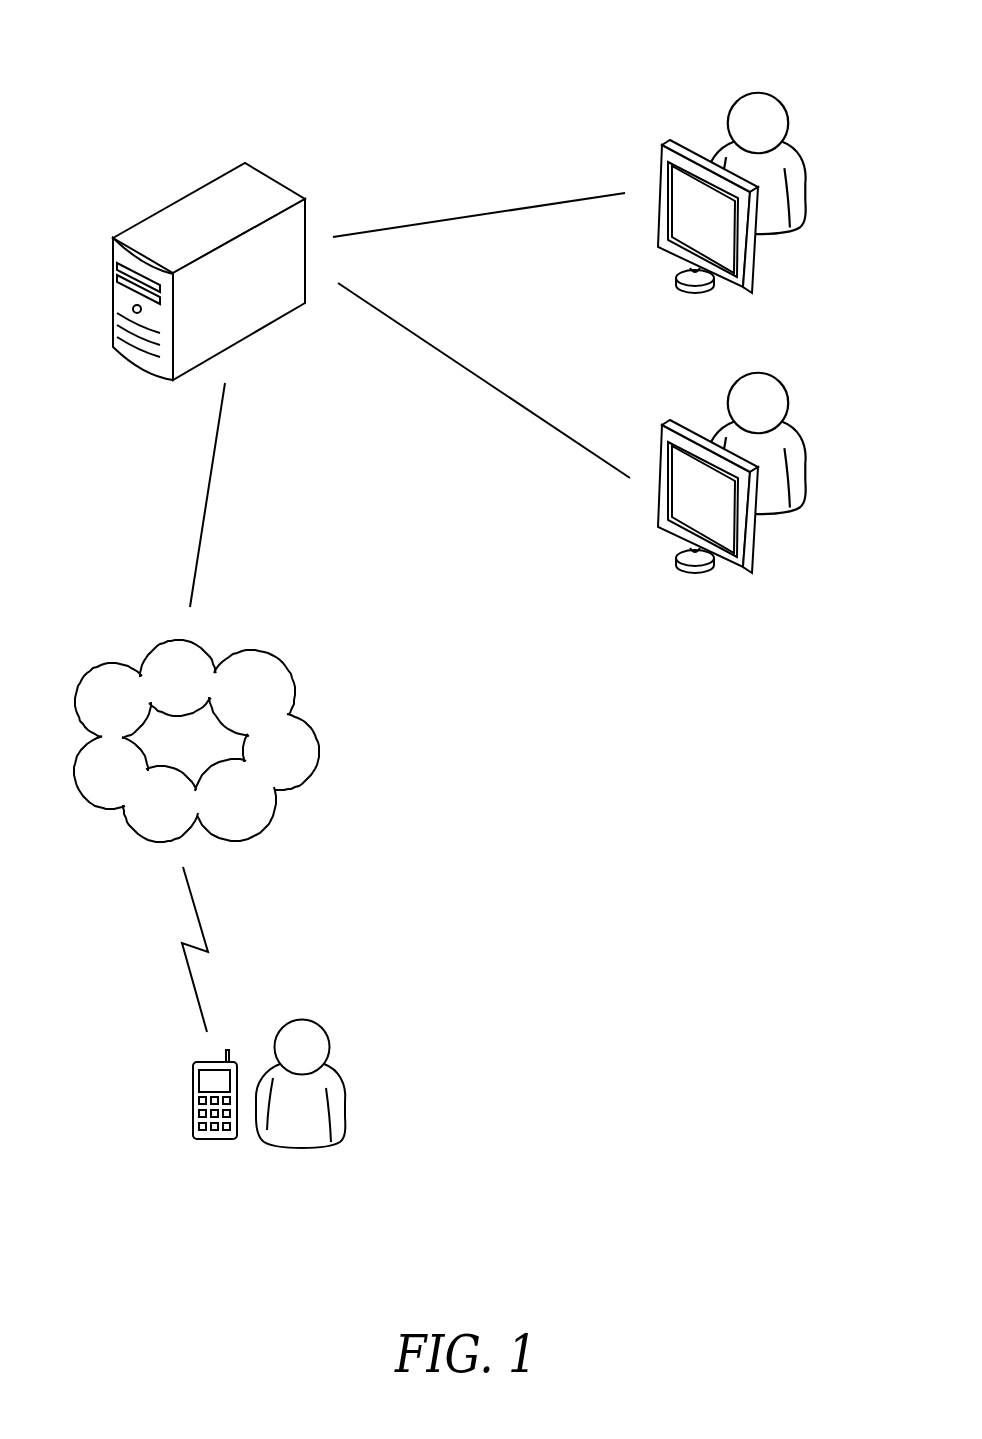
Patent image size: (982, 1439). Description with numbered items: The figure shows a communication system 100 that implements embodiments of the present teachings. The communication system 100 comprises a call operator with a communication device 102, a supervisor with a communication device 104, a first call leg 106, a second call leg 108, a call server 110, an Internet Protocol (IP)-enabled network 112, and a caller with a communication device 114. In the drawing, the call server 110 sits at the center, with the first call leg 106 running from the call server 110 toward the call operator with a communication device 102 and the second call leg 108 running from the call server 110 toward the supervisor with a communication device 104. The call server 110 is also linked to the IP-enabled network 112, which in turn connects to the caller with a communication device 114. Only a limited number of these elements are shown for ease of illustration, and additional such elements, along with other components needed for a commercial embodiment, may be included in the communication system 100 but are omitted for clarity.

The communication system 100 is at (157, 56).
The call operator with a communication device 102 is at (806, 484).
The supervisor with a communication device 104 is at (806, 204).
The first call leg 106 is at (437, 349).
The second call leg 108 is at (525, 208).
The call server 110 is at (113, 292).
The Internet Protocol (IP)-enabled network 112 is at (318, 750).
The caller with a communication device 114 is at (345, 1103).